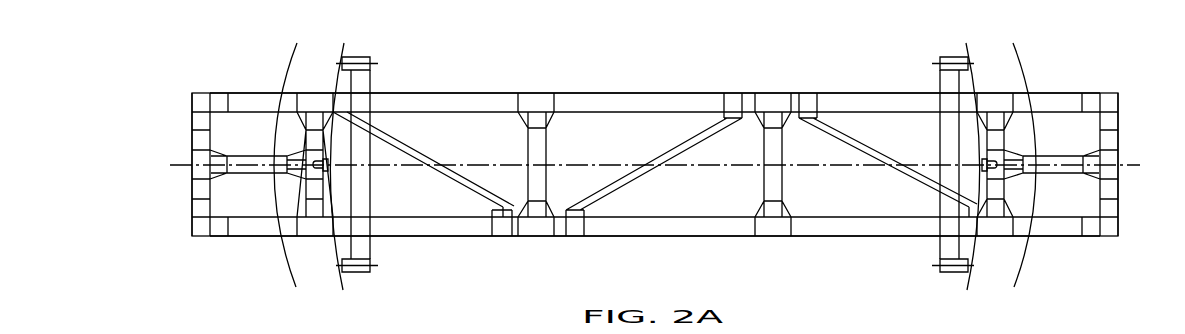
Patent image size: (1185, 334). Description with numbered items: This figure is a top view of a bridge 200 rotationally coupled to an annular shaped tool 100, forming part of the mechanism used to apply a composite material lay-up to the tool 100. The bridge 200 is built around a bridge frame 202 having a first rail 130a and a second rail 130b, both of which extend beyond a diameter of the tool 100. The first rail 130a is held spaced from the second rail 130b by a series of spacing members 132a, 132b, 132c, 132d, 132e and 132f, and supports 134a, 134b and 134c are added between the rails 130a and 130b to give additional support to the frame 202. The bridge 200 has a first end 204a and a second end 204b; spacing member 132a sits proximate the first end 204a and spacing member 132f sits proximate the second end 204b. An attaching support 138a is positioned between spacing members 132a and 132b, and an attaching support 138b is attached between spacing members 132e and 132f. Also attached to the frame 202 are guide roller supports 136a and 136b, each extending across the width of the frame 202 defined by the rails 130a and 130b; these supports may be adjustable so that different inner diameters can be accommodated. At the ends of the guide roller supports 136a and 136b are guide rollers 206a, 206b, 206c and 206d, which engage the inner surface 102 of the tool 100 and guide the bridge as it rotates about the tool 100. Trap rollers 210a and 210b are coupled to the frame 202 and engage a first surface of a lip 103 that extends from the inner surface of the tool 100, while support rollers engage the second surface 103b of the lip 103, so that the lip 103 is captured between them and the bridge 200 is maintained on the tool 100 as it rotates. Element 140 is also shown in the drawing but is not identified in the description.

The tool 100 is at (1026, 82).
The inner surface 102 is at (978, 240).
The lip 103 is at (320, 326).
The second surface 103b is at (352, 333).
The first rail 130a is at (580, 100).
The second rail 130b is at (600, 230).
The spacing member 132a is at (216, 137).
The spacing member 132b is at (313, 138).
The spacing member 132c is at (540, 160).
The spacing member 132d is at (775, 190).
The spacing member 132e is at (992, 140).
The spacing member 132f is at (1108, 193).
The support 134a is at (448, 175).
The support 134b is at (637, 180).
The support 134c is at (898, 180).
The guide roller support 136a is at (365, 82).
The guide roller support 136b is at (950, 87).
The attaching support 138a is at (243, 170).
The attaching support 138b is at (1047, 170).
The wheel rim 140 is at (293, 243).
The bridge 200 is at (1102, 250).
The bridge frame 202 is at (690, 100).
The first end 204a is at (202, 138).
The second end 204b is at (1117, 123).
The guide roller 206a is at (340, 65).
The guide roller 206b is at (340, 268).
The guide roller 206c is at (965, 67).
The guide roller 206d is at (965, 277).
The trap roller 210a is at (329, 164).
The trap roller 210b is at (981, 171).